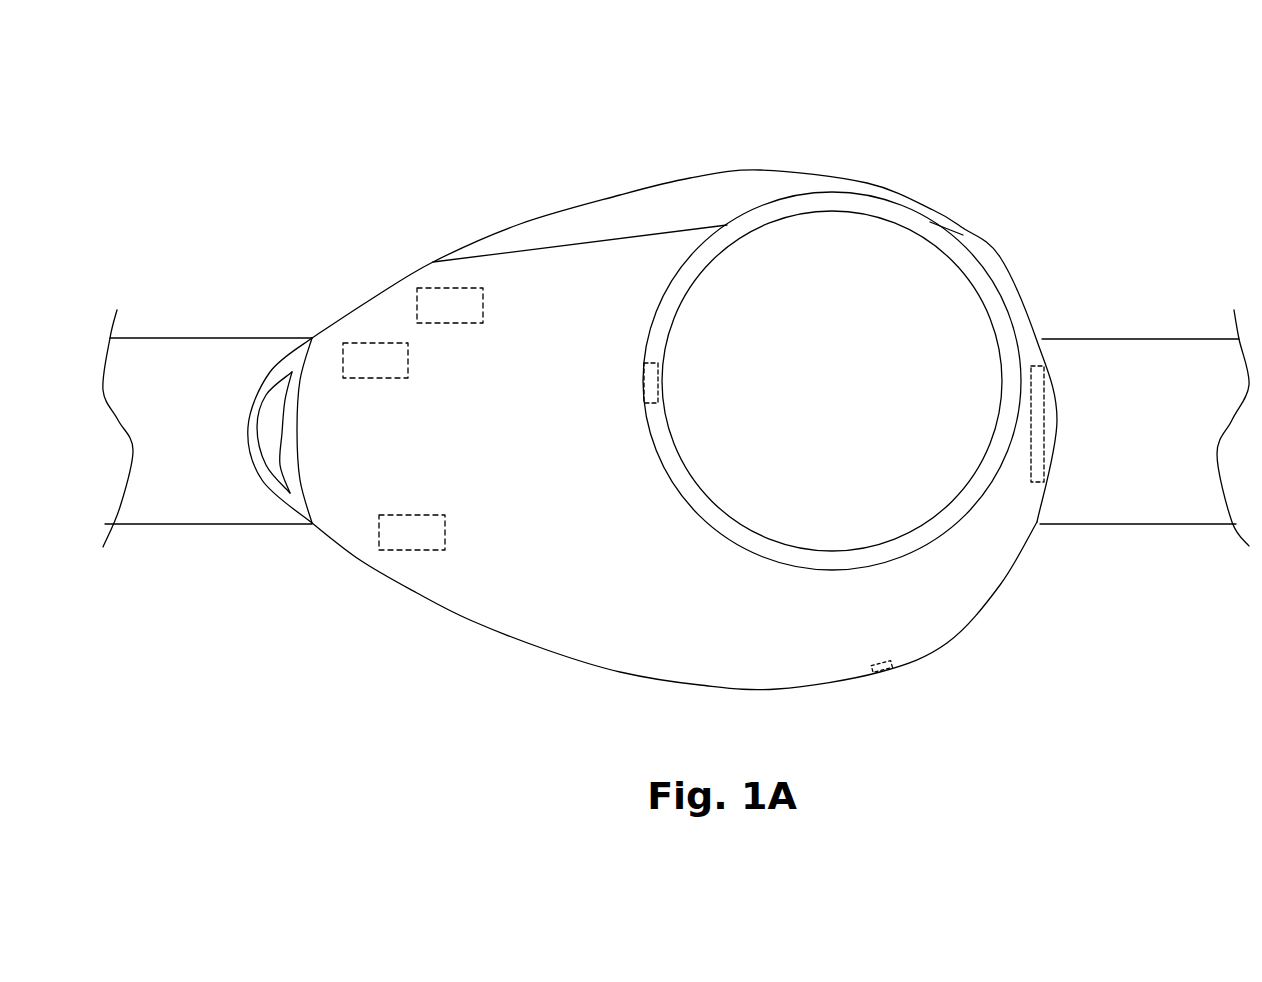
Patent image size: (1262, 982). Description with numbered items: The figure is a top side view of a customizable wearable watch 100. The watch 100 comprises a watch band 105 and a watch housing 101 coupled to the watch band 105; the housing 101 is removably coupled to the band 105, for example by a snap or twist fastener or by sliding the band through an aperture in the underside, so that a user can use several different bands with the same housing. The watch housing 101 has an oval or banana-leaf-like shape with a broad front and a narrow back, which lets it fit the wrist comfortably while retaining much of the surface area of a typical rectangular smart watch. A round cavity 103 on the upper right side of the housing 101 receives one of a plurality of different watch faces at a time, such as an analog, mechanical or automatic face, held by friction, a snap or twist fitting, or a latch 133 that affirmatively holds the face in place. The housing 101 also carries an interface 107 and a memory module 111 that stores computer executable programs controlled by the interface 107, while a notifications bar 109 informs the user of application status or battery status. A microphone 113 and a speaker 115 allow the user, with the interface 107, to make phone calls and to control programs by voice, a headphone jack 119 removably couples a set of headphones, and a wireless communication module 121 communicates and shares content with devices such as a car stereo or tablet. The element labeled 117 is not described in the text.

The watch 100 is at (205, 125).
The watch housing 101 is at (343, 297).
The cavity 103 is at (984, 290).
The watch band 105 is at (230, 512).
The interface 107 is at (543, 622).
The notifications bar 109 is at (667, 202).
The memory module 111 is at (447, 288).
The microphone 113 is at (412, 552).
The speaker 115 is at (1038, 484).
The end cap / nose insert 117 is at (277, 397).
The headphone jack 119 is at (885, 672).
The wireless communication module 121 is at (372, 343).
The latch 133 is at (648, 376).